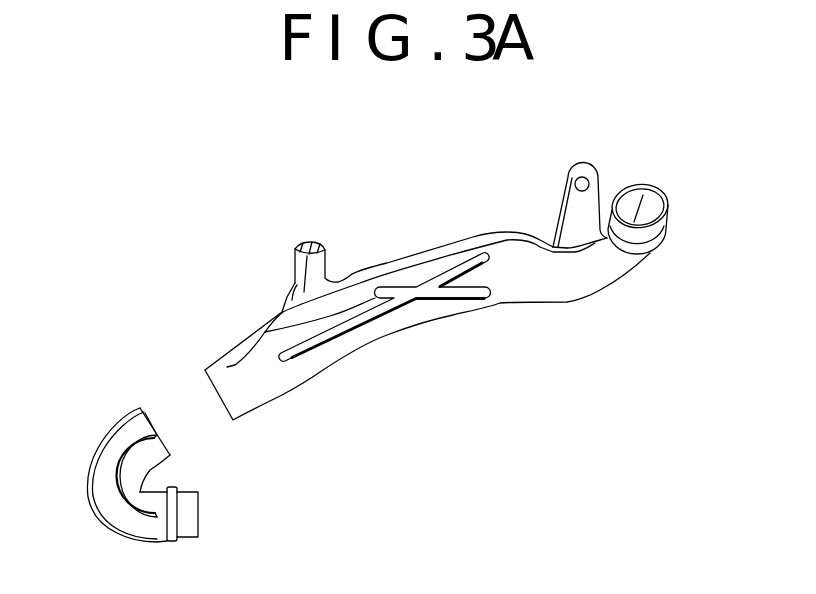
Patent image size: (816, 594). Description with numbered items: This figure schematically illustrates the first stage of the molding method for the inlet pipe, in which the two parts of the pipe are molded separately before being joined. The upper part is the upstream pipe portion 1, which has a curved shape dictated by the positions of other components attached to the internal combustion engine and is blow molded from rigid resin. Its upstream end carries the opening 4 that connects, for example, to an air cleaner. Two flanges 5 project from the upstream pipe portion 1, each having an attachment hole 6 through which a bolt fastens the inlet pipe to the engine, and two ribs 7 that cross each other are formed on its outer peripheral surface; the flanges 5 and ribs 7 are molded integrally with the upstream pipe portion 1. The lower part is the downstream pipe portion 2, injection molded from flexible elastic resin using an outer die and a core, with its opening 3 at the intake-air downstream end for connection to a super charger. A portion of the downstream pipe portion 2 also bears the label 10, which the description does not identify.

The upstream pipe portion 1 is at (418, 278).
The downstream pipe portion 2 is at (117, 469).
The opening 3 is at (190, 538).
The opening 4 is at (668, 228).
The flange 5 is at (300, 268).
The attachment hole 6 is at (575, 183).
The rib 7 is at (427, 299).
The flange 10 is at (102, 487).